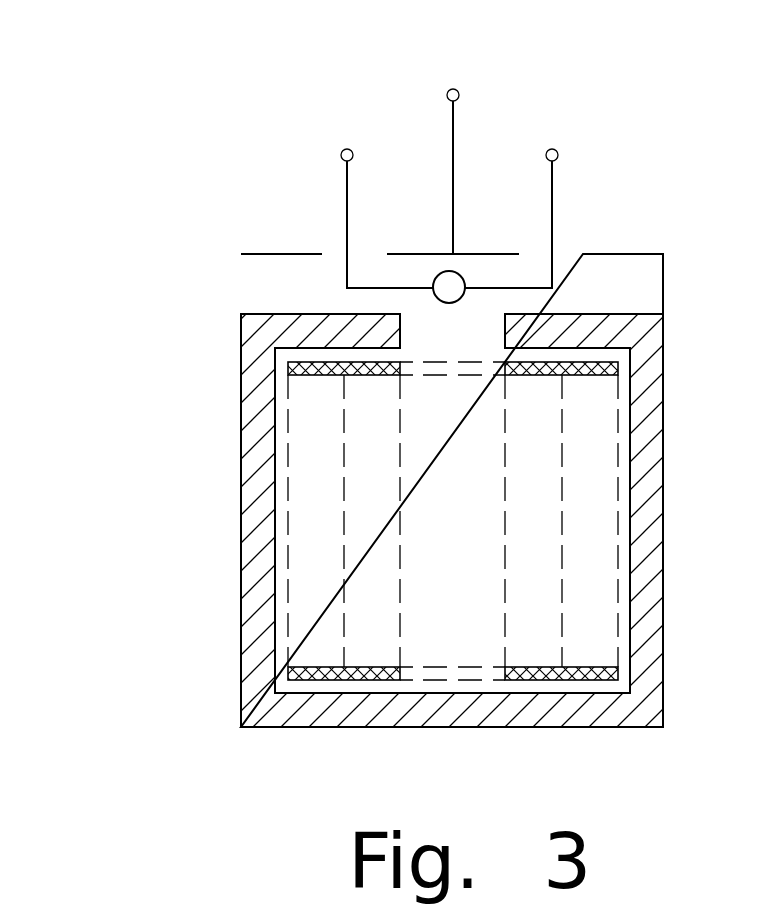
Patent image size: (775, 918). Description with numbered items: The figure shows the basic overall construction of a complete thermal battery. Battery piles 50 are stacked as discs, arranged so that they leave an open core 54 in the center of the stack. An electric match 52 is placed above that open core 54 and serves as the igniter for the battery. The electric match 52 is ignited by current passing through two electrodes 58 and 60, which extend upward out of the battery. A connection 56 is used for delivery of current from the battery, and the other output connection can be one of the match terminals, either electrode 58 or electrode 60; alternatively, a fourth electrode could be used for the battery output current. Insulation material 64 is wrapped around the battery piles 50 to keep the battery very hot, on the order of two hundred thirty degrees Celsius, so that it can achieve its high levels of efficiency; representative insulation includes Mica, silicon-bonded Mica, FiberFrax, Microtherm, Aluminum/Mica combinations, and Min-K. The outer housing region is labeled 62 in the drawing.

The battery piles 50 is at (552, 379).
The electric match 52 is at (438, 265).
The open core 54 is at (452, 648).
The connection 56 is at (478, 162).
The electrode 58 is at (355, 210).
The electrode 60 is at (539, 211).
The housing 62 is at (479, 490).
The insulation material 64 is at (652, 440).